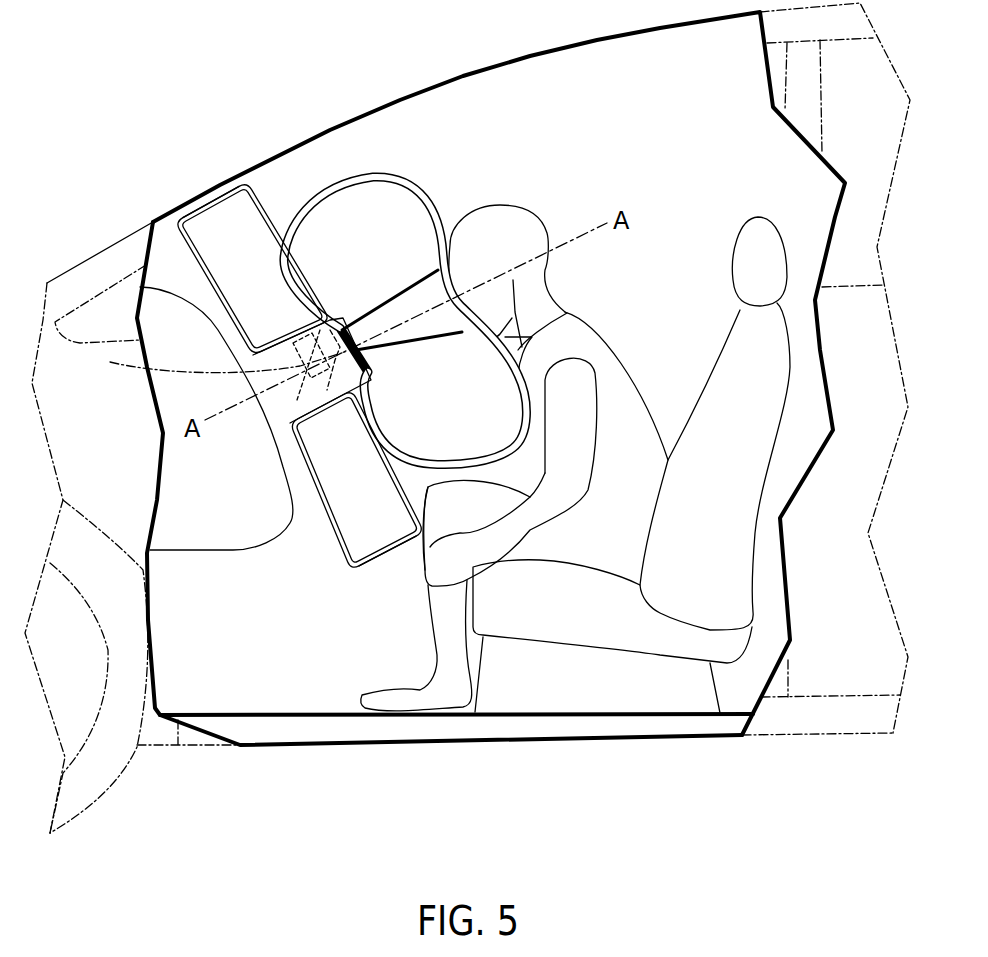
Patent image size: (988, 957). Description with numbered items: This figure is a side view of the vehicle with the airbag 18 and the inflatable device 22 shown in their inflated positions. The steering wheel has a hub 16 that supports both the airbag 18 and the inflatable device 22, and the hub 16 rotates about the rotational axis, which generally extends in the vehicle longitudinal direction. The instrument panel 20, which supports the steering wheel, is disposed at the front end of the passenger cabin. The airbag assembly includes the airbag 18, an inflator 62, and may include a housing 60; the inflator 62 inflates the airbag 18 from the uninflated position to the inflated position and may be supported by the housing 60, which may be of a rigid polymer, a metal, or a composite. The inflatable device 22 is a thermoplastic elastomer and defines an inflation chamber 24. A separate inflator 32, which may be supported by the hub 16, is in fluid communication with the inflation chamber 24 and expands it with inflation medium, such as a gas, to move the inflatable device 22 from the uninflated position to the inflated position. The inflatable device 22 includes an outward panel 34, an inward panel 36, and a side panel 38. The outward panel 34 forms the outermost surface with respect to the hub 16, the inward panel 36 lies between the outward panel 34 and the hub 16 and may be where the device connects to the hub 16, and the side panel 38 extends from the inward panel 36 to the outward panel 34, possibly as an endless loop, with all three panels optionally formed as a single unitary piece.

The hub 16 is at (297, 310).
The airbag 18 is at (407, 177).
The instrument panel 20 is at (240, 528).
The inflatable device 22 is at (265, 370).
The inflation chamber 24 is at (218, 213).
The inflator 32 is at (214, 363).
The outward panel 34 is at (190, 208).
The inward panel 36 is at (272, 350).
The side panel 38 is at (261, 200).
The housing 60 is at (328, 322).
The inflator 62 is at (362, 377).